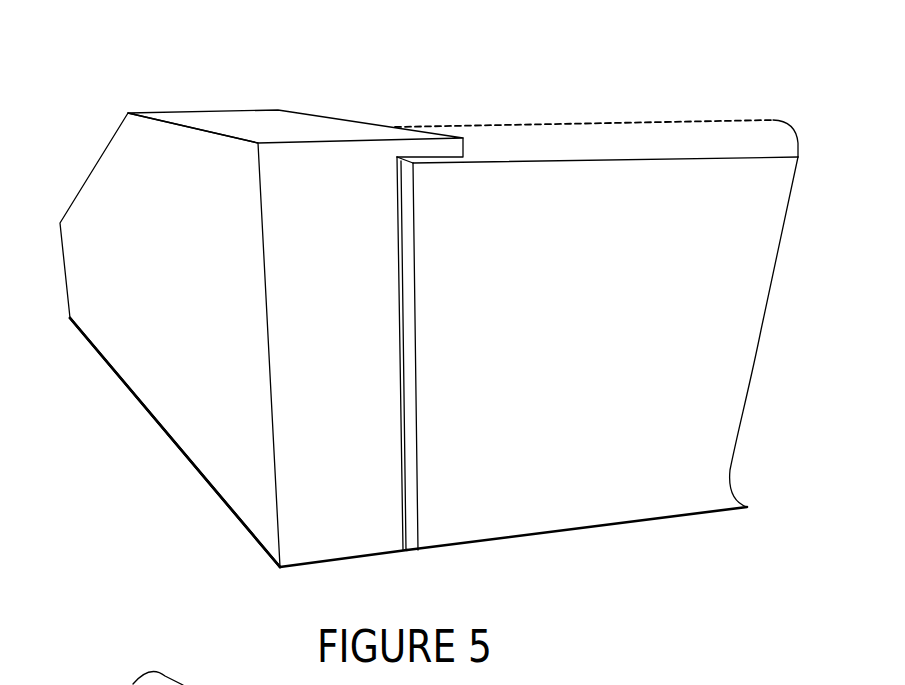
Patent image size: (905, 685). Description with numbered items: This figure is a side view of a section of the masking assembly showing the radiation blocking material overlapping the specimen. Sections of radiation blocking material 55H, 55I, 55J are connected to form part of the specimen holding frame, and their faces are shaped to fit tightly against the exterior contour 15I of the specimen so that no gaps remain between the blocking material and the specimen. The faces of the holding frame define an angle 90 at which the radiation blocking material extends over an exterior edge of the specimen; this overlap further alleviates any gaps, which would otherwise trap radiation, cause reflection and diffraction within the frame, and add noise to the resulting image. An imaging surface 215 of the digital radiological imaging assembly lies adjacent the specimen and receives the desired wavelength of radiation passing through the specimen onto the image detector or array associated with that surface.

The exterior contour 15I is at (735, 310).
The section of radiation blocking material 55H is at (347, 130).
The section of radiation blocking material 55I is at (113, 348).
The section of radiation blocking material 55J is at (327, 551).
The angle 90 is at (425, 189).
The imaging surface 215 is at (198, 473).